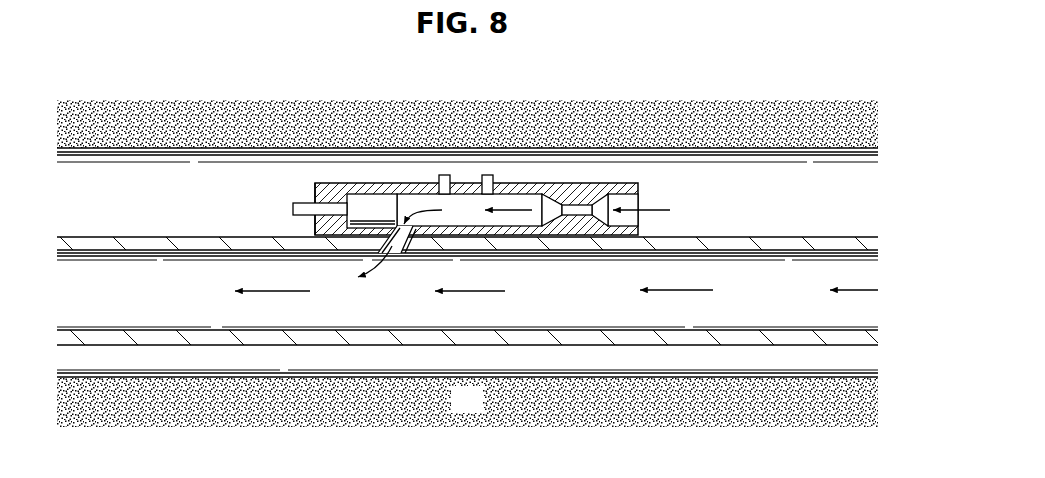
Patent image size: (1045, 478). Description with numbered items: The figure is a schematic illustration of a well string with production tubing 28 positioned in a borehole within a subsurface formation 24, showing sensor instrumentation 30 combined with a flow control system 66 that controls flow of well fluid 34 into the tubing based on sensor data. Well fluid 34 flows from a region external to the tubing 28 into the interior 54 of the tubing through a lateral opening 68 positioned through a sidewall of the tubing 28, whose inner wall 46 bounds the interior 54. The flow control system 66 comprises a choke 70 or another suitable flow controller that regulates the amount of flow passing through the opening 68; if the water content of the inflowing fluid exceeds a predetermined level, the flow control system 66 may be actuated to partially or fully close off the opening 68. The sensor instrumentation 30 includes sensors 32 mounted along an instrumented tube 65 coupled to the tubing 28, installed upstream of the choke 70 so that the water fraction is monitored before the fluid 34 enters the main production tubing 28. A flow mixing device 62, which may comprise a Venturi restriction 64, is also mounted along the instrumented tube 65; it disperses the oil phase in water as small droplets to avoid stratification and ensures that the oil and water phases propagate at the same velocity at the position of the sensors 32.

The subsurface formation 24 is at (455, 410).
The tubing 28 is at (190, 237).
The sensor instrumentation 30 is at (492, 145).
The sensor 32 is at (488, 176).
The fluid 34 is at (678, 292).
The inner wall 46 is at (712, 250).
The interior 54 is at (97, 302).
The flow mixing device 62 is at (567, 188).
The Venturi restriction 64 is at (583, 200).
The instrumented tube 65 is at (623, 185).
The flow control system 66 is at (323, 167).
The lateral opening 68 is at (405, 248).
The choke 70 is at (370, 204).